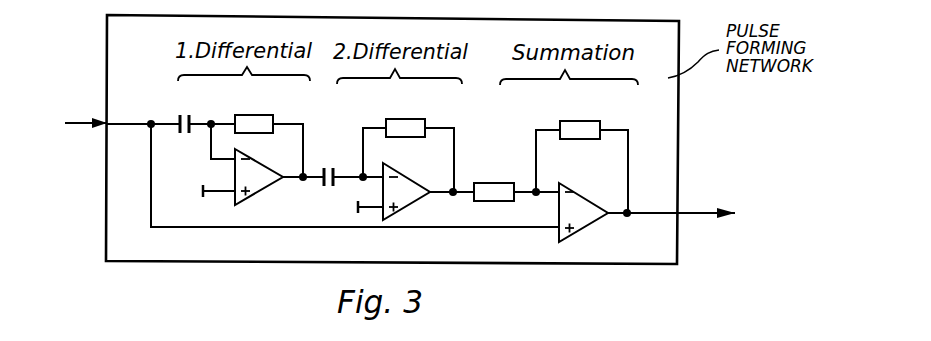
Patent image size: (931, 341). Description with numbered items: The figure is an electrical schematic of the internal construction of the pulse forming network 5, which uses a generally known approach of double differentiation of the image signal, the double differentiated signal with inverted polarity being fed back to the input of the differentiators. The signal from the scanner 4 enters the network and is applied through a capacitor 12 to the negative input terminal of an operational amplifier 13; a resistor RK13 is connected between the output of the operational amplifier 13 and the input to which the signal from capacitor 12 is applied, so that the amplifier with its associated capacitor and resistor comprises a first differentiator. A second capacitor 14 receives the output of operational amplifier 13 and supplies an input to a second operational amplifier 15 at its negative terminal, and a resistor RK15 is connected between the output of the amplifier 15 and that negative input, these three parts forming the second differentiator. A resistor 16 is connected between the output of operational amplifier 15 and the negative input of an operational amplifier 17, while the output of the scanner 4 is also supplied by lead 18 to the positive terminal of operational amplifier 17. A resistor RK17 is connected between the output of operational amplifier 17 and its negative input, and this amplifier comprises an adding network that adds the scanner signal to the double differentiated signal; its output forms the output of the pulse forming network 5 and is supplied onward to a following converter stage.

The scanner 4 is at (71, 108).
The pulse forming network 5 is at (663, 142).
The capacitor 12 is at (183, 134).
The operational amplifier 13 is at (276, 180).
The second capacitor 14 is at (328, 194).
The second operational amplifier 15 is at (408, 188).
The resistor 16 is at (490, 182).
The operational amplifier 17 is at (583, 208).
The lead 18 is at (420, 231).
The resistor RK13 is at (253, 116).
The resistor RK15 is at (405, 119).
The resistor RK17 is at (582, 120).